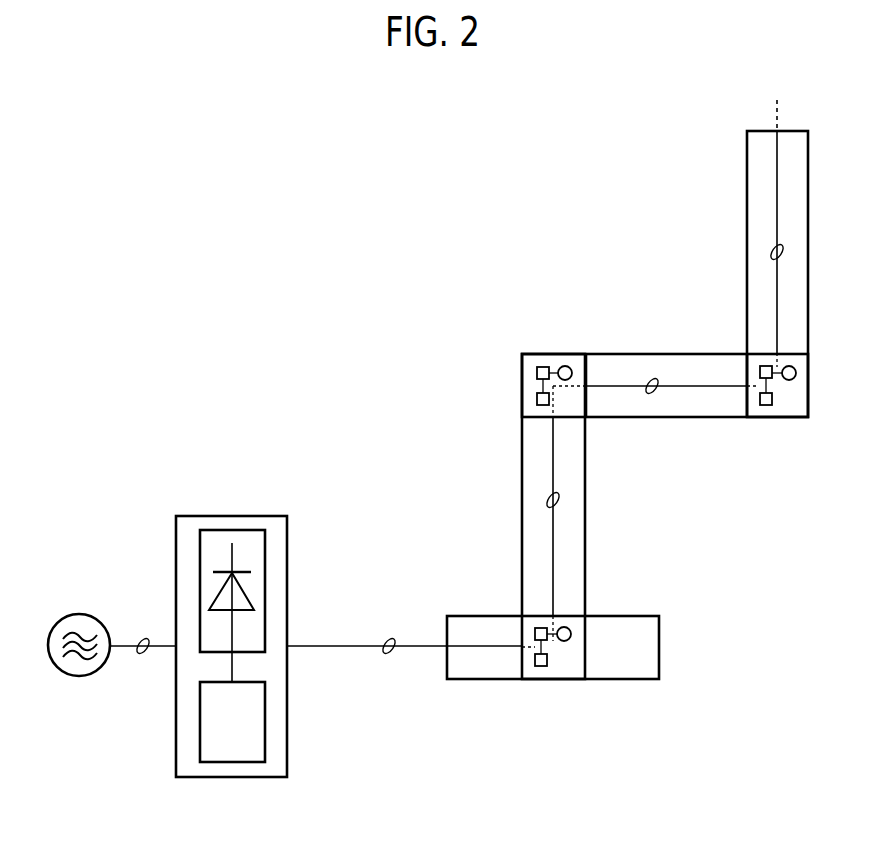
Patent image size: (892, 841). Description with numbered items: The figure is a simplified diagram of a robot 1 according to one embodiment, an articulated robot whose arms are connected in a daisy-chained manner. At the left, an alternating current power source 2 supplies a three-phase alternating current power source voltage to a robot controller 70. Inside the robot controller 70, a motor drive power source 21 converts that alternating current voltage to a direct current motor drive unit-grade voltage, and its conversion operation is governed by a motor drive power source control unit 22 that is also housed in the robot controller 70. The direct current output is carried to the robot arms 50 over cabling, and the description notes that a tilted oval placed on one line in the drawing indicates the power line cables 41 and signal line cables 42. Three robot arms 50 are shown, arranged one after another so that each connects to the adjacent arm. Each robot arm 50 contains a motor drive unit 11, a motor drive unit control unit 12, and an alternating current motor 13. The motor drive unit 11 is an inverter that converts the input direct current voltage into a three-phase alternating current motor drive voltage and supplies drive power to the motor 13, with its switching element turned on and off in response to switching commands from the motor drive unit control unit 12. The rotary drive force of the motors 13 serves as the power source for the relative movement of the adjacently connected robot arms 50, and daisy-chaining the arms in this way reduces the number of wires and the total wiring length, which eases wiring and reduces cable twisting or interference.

The robot 1 is at (348, 362).
The alternating current power source 2 is at (78, 614).
The motor drive unit 11 is at (538, 366).
The motor drive unit control unit 12 is at (540, 406).
The alternating current motor 13 is at (565, 366).
The motor drive power source 21 is at (200, 540).
The motor drive power source control unit 22 is at (200, 712).
The power line cable 41 is at (536, 378).
The signal line cable 42 is at (335, 646).
The robot arm 50 is at (747, 207).
The robot controller 70 is at (240, 516).